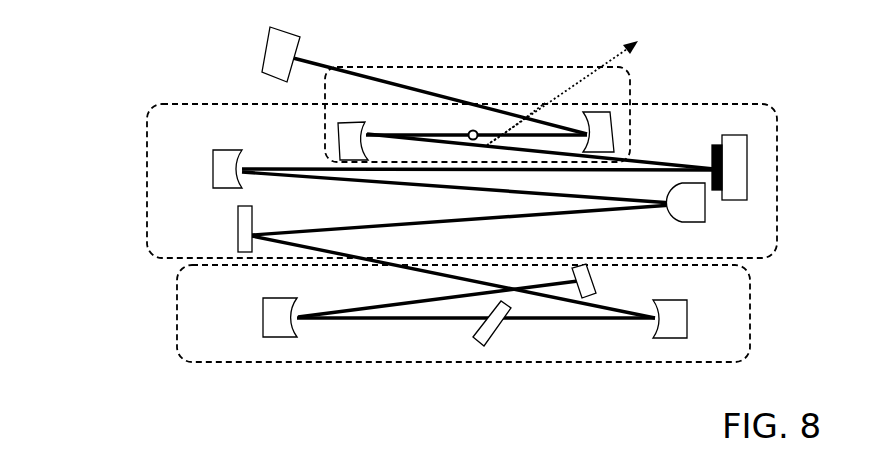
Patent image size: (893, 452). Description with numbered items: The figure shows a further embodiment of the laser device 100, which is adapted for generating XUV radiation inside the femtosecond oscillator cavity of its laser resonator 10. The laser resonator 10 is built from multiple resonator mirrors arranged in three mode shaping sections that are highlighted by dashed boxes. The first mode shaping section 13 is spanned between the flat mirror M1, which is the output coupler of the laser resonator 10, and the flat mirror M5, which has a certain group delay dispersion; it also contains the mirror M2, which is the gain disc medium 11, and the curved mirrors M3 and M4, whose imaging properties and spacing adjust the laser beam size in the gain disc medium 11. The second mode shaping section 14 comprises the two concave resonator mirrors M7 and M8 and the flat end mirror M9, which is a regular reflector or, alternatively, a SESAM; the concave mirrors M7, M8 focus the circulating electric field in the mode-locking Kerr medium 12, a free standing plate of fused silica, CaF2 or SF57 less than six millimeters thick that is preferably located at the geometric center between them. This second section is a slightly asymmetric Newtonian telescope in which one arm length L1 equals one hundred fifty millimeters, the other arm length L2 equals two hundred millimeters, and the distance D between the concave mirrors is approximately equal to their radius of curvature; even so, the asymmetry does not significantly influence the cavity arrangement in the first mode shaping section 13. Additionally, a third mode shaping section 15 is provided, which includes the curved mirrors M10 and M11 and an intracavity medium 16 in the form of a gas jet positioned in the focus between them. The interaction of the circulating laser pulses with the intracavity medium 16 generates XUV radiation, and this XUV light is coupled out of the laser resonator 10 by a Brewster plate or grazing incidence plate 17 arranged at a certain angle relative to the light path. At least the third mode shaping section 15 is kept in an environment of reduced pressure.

The laser device 100 is at (134, 71).
The laser resonator 10 is at (318, 222).
The gain disc medium 11 is at (723, 168).
The mode-locking Kerr medium 12 is at (497, 328).
The first mode shaping section 13 is at (750, 332).
The second mode shaping section 14 is at (776, 128).
The third mode shaping section 15 is at (630, 83).
The intracavity medium 16 is at (483, 130).
The grazing incidence plate 17 is at (523, 130).
The flat mirror M1 is at (257, 54).
The mirror M2 is at (713, 160).
The curved mirror M3 is at (211, 169).
The curved mirror M4 is at (685, 215).
The flat mirror M5 is at (224, 229).
The concave resonator mirror M7 is at (686, 319).
The concave resonator mirror M8 is at (262, 317).
The flat end mirror M9 is at (598, 281).
The curved mirror M10 is at (329, 141).
The curved mirror M11 is at (621, 132).
The telescope arm length L1 is at (440, 291).
The telescope arm length L2 is at (492, 285).
The distance between mirrors D is at (430, 318).
The XUV radiation XUV is at (562, 89).